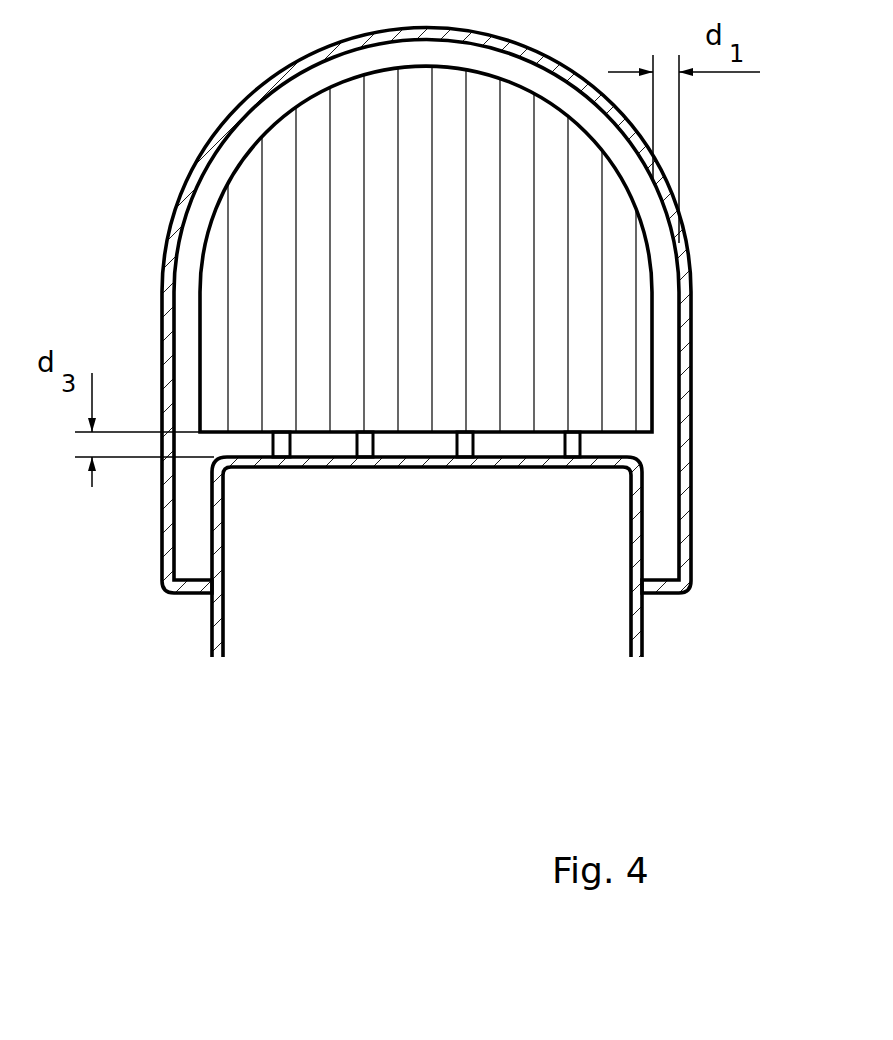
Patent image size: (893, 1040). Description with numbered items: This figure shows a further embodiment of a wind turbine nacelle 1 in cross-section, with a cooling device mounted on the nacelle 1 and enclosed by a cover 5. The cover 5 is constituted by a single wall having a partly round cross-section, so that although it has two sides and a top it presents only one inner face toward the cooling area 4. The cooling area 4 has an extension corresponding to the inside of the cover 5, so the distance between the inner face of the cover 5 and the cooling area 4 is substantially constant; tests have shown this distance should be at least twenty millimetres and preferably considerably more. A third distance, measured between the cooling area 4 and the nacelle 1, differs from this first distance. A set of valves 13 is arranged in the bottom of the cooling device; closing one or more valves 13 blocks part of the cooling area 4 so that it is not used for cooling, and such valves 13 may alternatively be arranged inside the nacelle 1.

The wind turbine nacelle 1 is at (642, 537).
The cooling area 4 is at (615, 338).
The cover 5 is at (685, 382).
The valves 13 is at (363, 448).